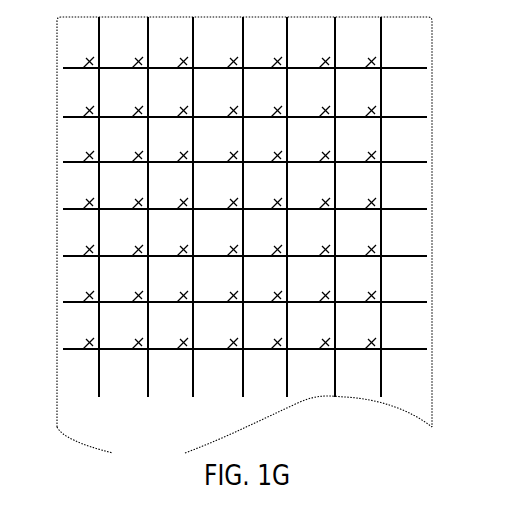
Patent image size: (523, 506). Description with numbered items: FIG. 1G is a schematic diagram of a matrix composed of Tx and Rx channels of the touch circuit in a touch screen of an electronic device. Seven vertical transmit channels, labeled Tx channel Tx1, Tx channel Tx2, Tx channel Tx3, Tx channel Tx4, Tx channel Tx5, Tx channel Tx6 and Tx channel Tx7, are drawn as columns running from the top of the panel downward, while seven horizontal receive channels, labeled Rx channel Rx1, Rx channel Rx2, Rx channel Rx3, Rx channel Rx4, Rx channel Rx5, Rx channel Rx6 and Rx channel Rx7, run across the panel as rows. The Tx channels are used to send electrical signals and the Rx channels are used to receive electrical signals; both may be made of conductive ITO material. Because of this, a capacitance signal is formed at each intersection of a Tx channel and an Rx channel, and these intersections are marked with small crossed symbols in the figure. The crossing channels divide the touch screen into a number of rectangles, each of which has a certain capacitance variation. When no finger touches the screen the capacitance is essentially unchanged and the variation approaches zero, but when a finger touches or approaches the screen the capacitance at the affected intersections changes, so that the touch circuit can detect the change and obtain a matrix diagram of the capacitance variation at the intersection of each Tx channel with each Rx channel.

The Tx channel Tx1 is at (86, 207).
The Tx channel Tx2 is at (133, 207).
The Tx channel Tx3 is at (177, 207).
The Tx channel Tx4 is at (225, 207).
The Tx channel Tx5 is at (273, 207).
The Tx channel Tx6 is at (320, 207).
The Tx channel Tx7 is at (367, 207).
The Rx channel Rx1 is at (245, 76).
The Rx channel Rx2 is at (245, 125).
The Rx channel Rx3 is at (245, 170).
The Rx channel Rx4 is at (245, 217).
The Rx channel Rx5 is at (245, 264).
The Rx channel Rx6 is at (245, 310).
The Rx channel Rx7 is at (245, 357).